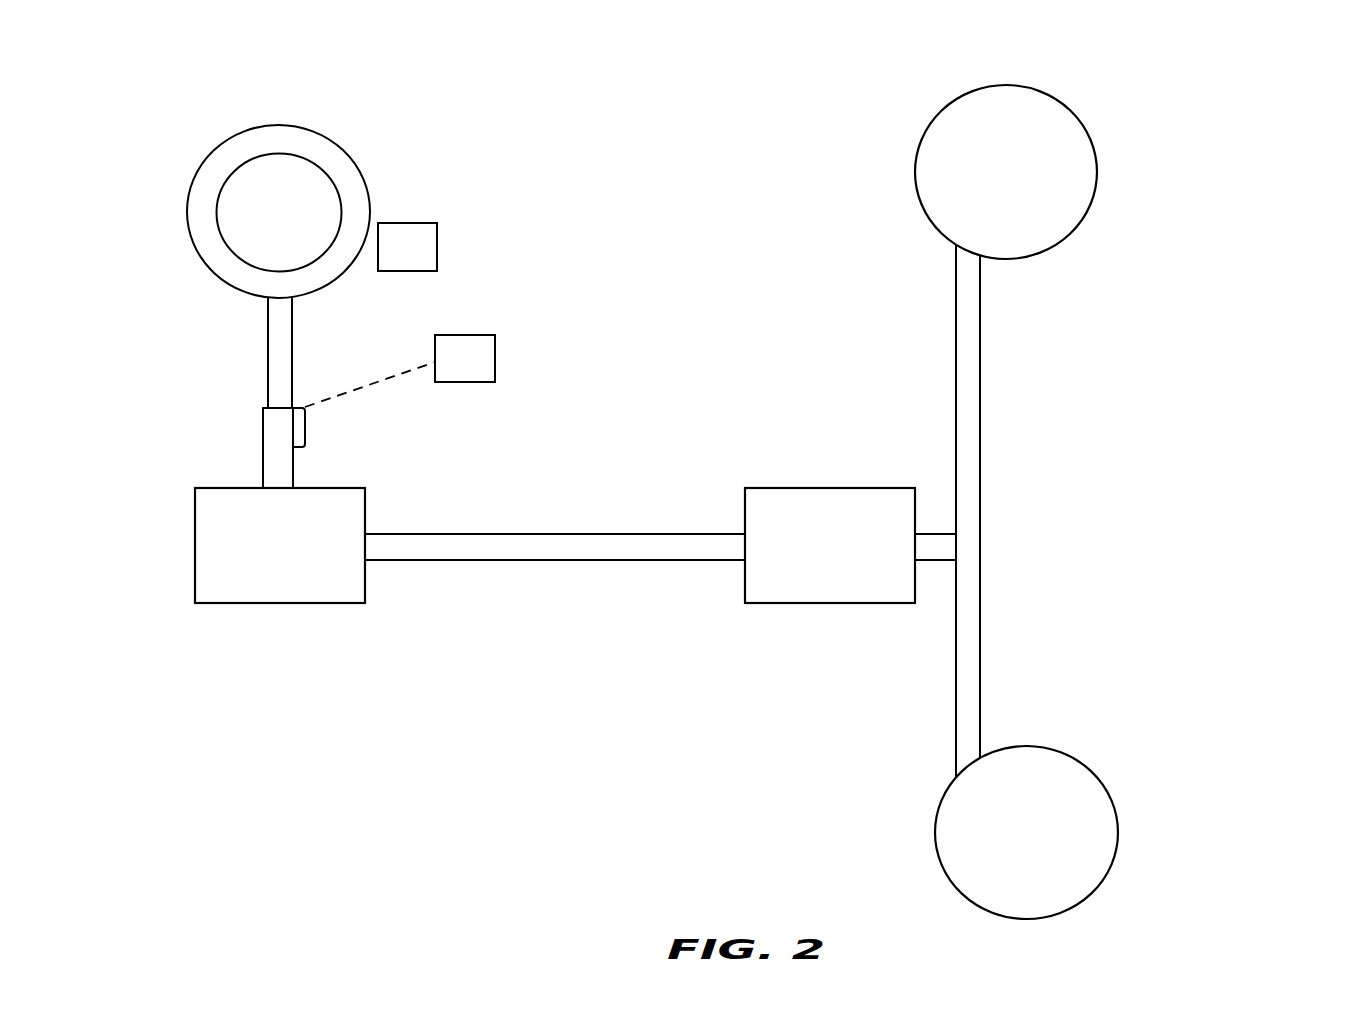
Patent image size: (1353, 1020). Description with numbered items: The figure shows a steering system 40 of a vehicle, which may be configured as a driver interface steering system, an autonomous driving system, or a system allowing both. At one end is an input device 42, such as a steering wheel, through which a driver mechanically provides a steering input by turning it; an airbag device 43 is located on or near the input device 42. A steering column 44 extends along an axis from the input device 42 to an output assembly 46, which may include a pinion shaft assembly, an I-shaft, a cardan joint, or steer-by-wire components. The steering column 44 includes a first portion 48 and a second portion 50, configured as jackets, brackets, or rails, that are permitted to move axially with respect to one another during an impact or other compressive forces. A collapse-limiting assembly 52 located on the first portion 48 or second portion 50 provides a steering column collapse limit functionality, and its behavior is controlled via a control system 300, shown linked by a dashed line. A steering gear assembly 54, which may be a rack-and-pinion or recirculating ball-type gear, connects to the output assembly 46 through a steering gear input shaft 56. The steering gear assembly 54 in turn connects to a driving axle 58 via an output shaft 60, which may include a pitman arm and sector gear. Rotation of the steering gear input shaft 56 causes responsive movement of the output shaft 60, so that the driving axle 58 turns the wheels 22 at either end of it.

The wheels 22 is at (1070, 232).
The steering system 40 is at (1265, 80).
The input device 42 is at (202, 162).
The airbag device 43 is at (420, 260).
The steering column 44 is at (281, 393).
The output assembly 46 is at (292, 558).
The first portion 48 is at (302, 350).
The second portion 50 is at (302, 480).
The collapse-limiting assembly 52 is at (314, 438).
The steering gear assembly 54 is at (842, 558).
The steering gear input shaft 56 is at (717, 532).
The driving axle 58 is at (982, 615).
The output shaft 60 is at (945, 530).
The control system 300 is at (482, 369).